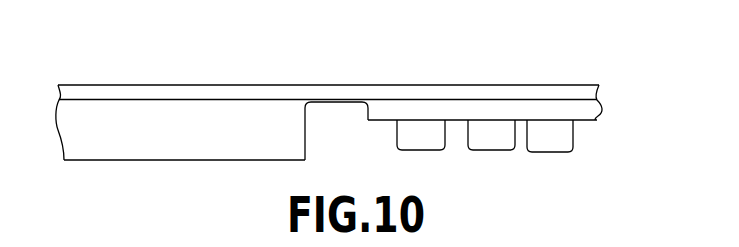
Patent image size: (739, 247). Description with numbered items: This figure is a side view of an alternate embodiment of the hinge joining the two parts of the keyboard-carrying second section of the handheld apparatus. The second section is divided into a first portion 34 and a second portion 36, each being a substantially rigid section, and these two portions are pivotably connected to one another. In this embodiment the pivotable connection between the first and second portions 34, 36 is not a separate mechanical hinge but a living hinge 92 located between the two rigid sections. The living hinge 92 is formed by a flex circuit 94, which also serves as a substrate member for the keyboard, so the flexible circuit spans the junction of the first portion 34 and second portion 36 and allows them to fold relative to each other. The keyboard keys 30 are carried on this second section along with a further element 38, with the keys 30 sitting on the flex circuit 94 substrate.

The keys 30 is at (478, 137).
The first portion 34 is at (112, 152).
The second portion 36 is at (492, 92).
The outer solder bump 38 is at (555, 153).
The living hinge 92 is at (335, 85).
The flex circuit 94 is at (193, 101).